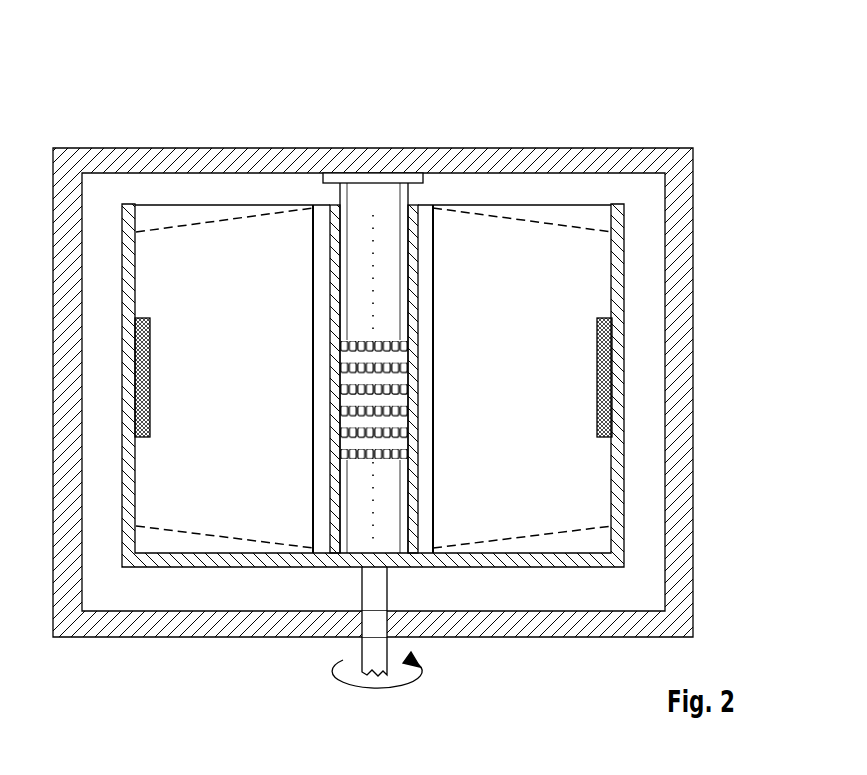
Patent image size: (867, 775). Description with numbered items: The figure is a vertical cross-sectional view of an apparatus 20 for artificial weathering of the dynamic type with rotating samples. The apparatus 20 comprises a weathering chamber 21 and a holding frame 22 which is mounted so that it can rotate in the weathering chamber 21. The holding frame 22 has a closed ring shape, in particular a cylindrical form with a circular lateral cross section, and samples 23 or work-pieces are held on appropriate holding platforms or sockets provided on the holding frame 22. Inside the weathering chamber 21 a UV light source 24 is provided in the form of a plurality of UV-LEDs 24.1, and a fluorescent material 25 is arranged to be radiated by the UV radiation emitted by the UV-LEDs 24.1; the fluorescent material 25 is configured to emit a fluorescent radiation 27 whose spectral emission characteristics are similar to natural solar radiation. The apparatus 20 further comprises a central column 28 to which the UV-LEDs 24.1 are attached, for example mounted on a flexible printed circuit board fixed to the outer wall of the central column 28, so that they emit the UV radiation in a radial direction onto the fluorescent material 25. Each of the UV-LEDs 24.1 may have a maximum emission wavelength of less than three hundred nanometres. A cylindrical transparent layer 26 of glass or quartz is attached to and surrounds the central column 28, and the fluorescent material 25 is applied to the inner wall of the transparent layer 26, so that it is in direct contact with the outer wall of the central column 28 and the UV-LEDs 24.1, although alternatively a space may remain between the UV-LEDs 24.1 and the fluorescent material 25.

The apparatus 20 is at (102, 110).
The weathering chamber 21 is at (693, 450).
The holding frame 22 is at (612, 260).
The samples 23 is at (150, 398).
The UV light source 24 is at (449, 400).
The UV-LEDs 24.1 is at (387, 422).
The fluorescent material 25 is at (335, 270).
The transparent layer 26 is at (330, 430).
The fluorescent radiation 27 is at (188, 228).
The central column 28 is at (353, 297).